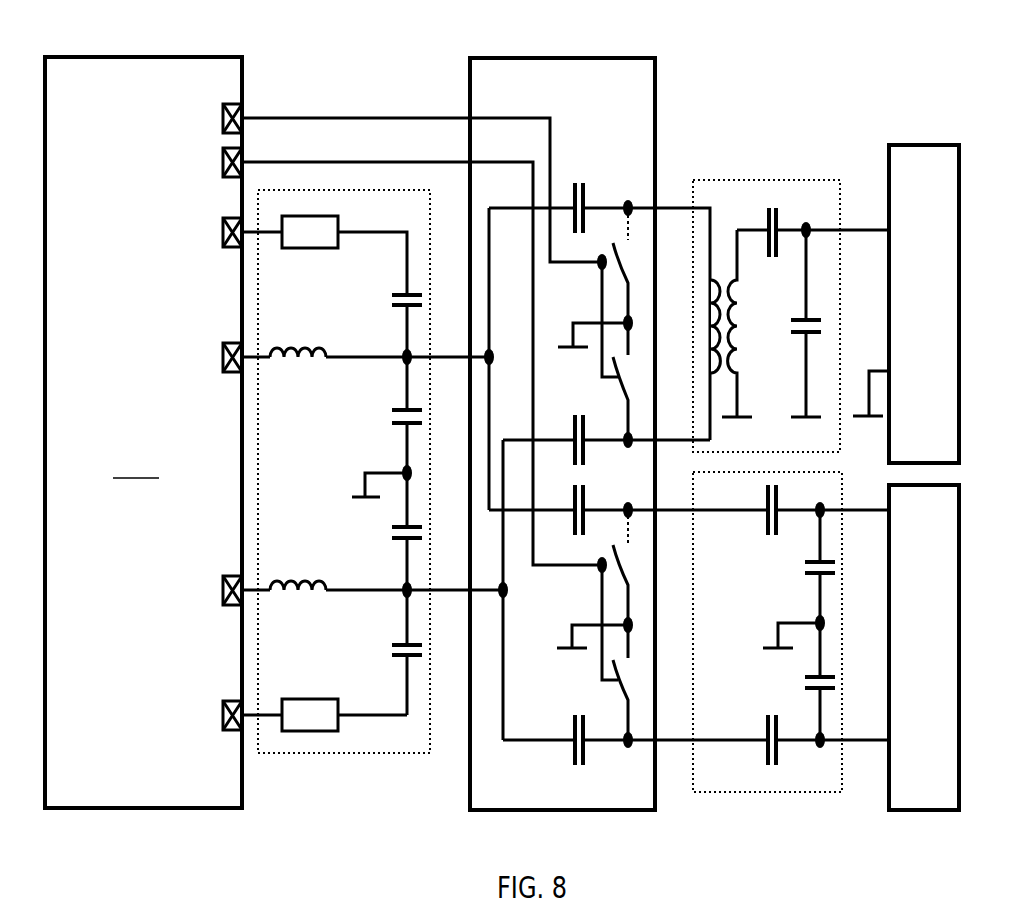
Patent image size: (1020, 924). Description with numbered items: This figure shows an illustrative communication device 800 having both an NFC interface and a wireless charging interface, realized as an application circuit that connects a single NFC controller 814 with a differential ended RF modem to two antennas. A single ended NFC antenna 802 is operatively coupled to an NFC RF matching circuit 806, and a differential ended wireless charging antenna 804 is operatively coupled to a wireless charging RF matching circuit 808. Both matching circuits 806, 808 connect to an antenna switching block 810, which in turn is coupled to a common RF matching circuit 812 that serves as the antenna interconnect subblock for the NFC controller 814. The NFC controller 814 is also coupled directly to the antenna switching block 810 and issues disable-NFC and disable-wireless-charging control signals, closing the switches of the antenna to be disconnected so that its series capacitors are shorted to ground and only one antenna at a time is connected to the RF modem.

The communication device 800 is at (329, 60).
The single ended NFC antenna 802 is at (952, 180).
The wireless charging antenna 804 is at (952, 520).
The NFC RF matching circuit 806 is at (832, 212).
The wireless charging RF matching circuit 808 is at (832, 782).
The antenna switching block 810 is at (641, 96).
The common RF matching circuit 812 is at (419, 215).
The NFC controller 814 is at (82, 93).